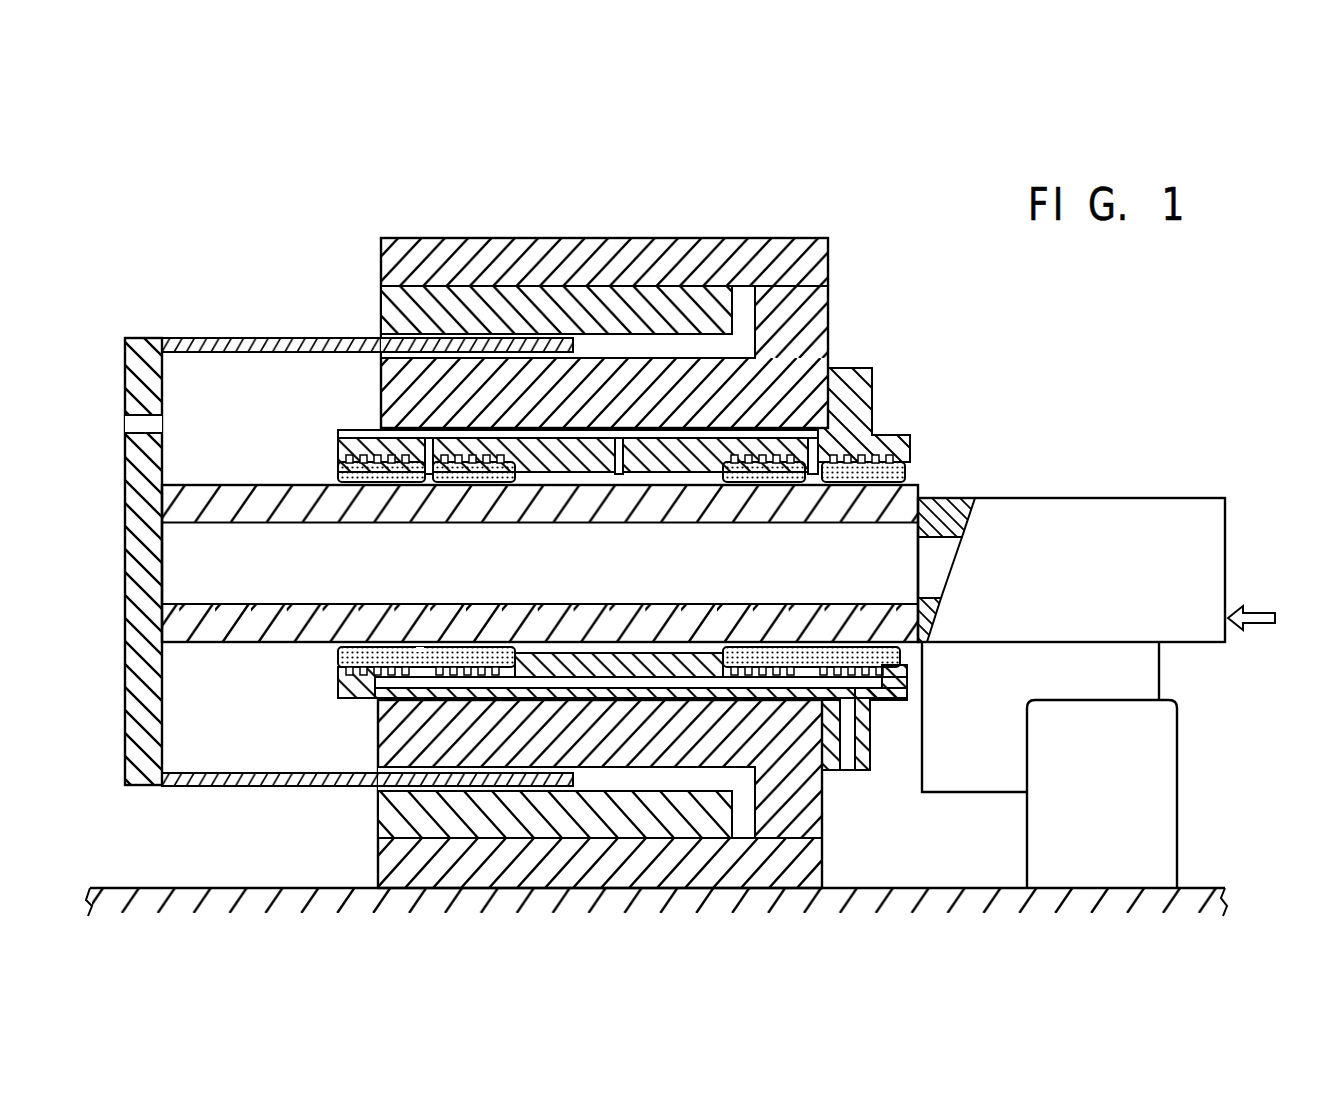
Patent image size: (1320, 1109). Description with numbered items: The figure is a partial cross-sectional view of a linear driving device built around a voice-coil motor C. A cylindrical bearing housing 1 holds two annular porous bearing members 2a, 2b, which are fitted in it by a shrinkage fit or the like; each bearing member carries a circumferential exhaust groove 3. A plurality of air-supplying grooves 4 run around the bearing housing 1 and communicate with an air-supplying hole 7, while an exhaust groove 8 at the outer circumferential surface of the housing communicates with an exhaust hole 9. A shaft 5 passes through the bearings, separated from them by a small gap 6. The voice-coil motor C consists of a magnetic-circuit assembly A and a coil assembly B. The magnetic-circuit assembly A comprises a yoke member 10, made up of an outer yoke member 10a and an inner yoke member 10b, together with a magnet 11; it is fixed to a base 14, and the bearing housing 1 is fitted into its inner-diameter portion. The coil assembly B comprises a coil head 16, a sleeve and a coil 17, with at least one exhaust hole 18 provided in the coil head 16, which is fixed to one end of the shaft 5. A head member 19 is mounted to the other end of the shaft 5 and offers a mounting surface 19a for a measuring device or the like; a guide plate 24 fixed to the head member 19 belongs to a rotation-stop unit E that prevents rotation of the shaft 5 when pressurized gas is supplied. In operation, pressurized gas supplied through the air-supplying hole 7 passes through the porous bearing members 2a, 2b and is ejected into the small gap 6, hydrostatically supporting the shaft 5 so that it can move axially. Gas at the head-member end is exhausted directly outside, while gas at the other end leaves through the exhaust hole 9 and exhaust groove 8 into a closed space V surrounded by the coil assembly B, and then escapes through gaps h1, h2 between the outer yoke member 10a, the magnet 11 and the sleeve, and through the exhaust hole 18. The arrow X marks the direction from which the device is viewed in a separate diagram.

The bearing housing 1 is at (866, 393).
The porous bearing member 2a is at (463, 655).
The porous bearing member 2b is at (750, 648).
The exhaust groove 3 is at (420, 648).
The air-supplying groove 4 is at (882, 456).
The shaft 5 is at (535, 616).
The small gap 6 is at (340, 658).
The air-supplying hole 7 is at (847, 772).
The exhaust groove 8 is at (340, 433).
The exhaust hole 9 is at (428, 470).
The yoke member 10 is at (580, 304).
The outer yoke member 10a is at (625, 240).
The inner yoke member 10b is at (395, 418).
The magnet 11 is at (395, 298).
The base 14 is at (1216, 897).
The coil head 16 is at (120, 561).
The coil 17 is at (228, 338).
The exhaust hole 18 is at (130, 425).
The head member 19 is at (1146, 498).
The mounting surface 19a is at (1227, 510).
The guide plate 24 is at (1152, 666).
The magnetic-circuit assembly A is at (845, 300).
The coil assembly B is at (131, 330).
The voice-coil motor C is at (440, 233).
The rotation-stop unit E is at (1180, 750).
The closed space V is at (185, 375).
The viewing direction X is at (1262, 620).
The gap h1 is at (385, 338).
The gap h2 is at (383, 352).